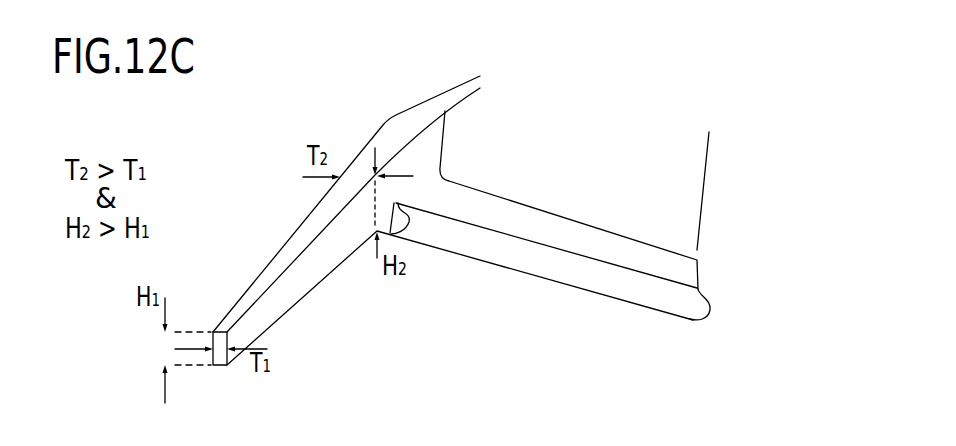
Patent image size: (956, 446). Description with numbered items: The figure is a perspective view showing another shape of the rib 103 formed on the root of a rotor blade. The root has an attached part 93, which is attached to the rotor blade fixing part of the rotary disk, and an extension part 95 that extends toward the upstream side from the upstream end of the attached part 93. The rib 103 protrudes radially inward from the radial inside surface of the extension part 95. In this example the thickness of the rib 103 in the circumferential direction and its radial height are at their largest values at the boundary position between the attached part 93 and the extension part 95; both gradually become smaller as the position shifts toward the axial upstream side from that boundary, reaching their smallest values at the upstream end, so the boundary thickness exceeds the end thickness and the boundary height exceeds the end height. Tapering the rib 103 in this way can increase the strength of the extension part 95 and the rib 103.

The attached part 93 is at (495, 255).
The extension part 95 is at (262, 219).
The rib 103 is at (218, 355).